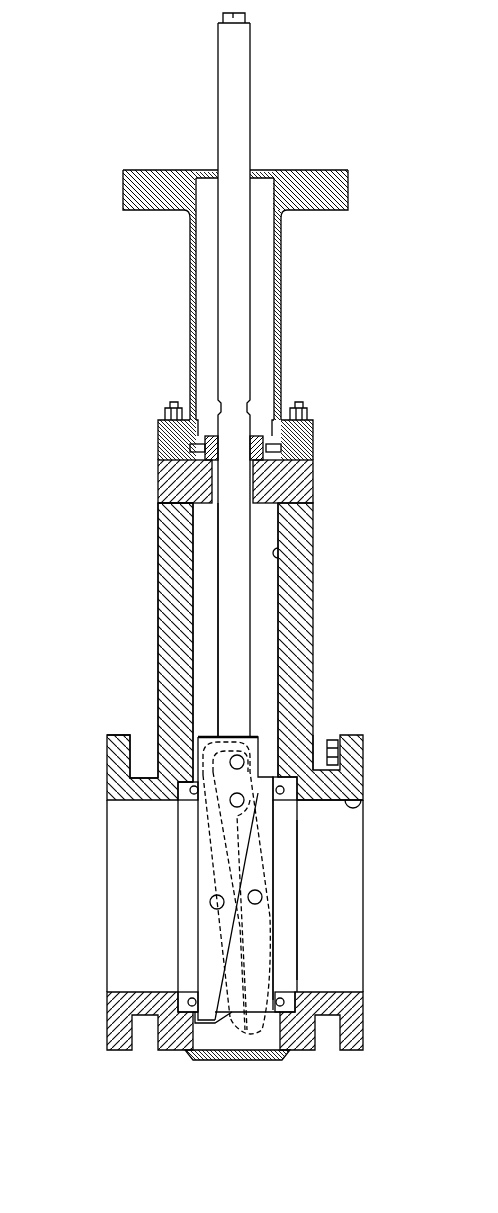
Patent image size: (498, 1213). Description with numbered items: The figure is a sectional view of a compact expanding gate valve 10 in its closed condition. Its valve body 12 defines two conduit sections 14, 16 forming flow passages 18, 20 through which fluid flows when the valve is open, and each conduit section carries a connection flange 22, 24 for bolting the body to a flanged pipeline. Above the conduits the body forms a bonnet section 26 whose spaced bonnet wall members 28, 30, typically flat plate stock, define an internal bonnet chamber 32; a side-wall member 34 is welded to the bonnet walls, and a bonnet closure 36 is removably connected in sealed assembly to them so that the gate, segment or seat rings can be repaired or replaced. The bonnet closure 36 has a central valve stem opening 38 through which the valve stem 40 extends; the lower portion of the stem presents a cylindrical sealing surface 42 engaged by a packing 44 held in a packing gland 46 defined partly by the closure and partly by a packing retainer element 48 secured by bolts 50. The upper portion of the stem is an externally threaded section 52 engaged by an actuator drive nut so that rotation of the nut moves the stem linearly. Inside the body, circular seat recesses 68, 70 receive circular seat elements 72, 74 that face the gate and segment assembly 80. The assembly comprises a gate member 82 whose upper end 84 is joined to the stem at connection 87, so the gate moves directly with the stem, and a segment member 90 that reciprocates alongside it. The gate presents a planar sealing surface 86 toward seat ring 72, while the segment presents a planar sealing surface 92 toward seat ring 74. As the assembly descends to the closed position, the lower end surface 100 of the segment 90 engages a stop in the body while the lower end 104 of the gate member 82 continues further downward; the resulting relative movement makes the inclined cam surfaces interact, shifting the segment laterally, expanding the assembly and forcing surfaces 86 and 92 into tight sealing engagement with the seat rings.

The compact expanding gate valve 10 is at (100, 336).
The valve body 12 is at (238, 655).
The conduit section 14 is at (162, 803).
The conduit section 16 is at (365, 807).
The flow passage 18 is at (117, 923).
The flow passage 20 is at (358, 910).
The connection flange 22 is at (110, 750).
The connection flange 24 is at (352, 745).
The bonnet section 26 is at (158, 607).
The bonnet wall member 28 is at (173, 693).
The bonnet wall member 30 is at (302, 625).
The internal bonnet chamber 32 is at (267, 530).
The side-wall member 34 is at (279, 552).
The bonnet closure 36 is at (162, 503).
The valve stem opening 38 is at (162, 537).
The valve stem 40 is at (230, 660).
The cylindrical sealing surface 42 is at (218, 683).
The packing 44 is at (258, 477).
The packing gland 46 is at (212, 485).
The packing retainer element 48 is at (162, 450).
The bolts 50 is at (283, 450).
The externally threaded section 52 is at (250, 280).
The circular seat recess 68 is at (188, 995).
The circular seat recess 70 is at (292, 993).
The circular seat element 72 is at (190, 797).
The circular seat element 74 is at (292, 798).
The gate and segment assembly 80 is at (285, 932).
The gate member 82 is at (203, 963).
The upper end of gate member 84 is at (183, 730).
The planar sealing surface 86 is at (197, 918).
The stem-to-gate connection 87 is at (240, 727).
The segment member 90 is at (270, 832).
The planar sealing surface 92 is at (277, 860).
The lower end surface 100 is at (258, 1025).
The lower end of gate member 104 is at (207, 1022).